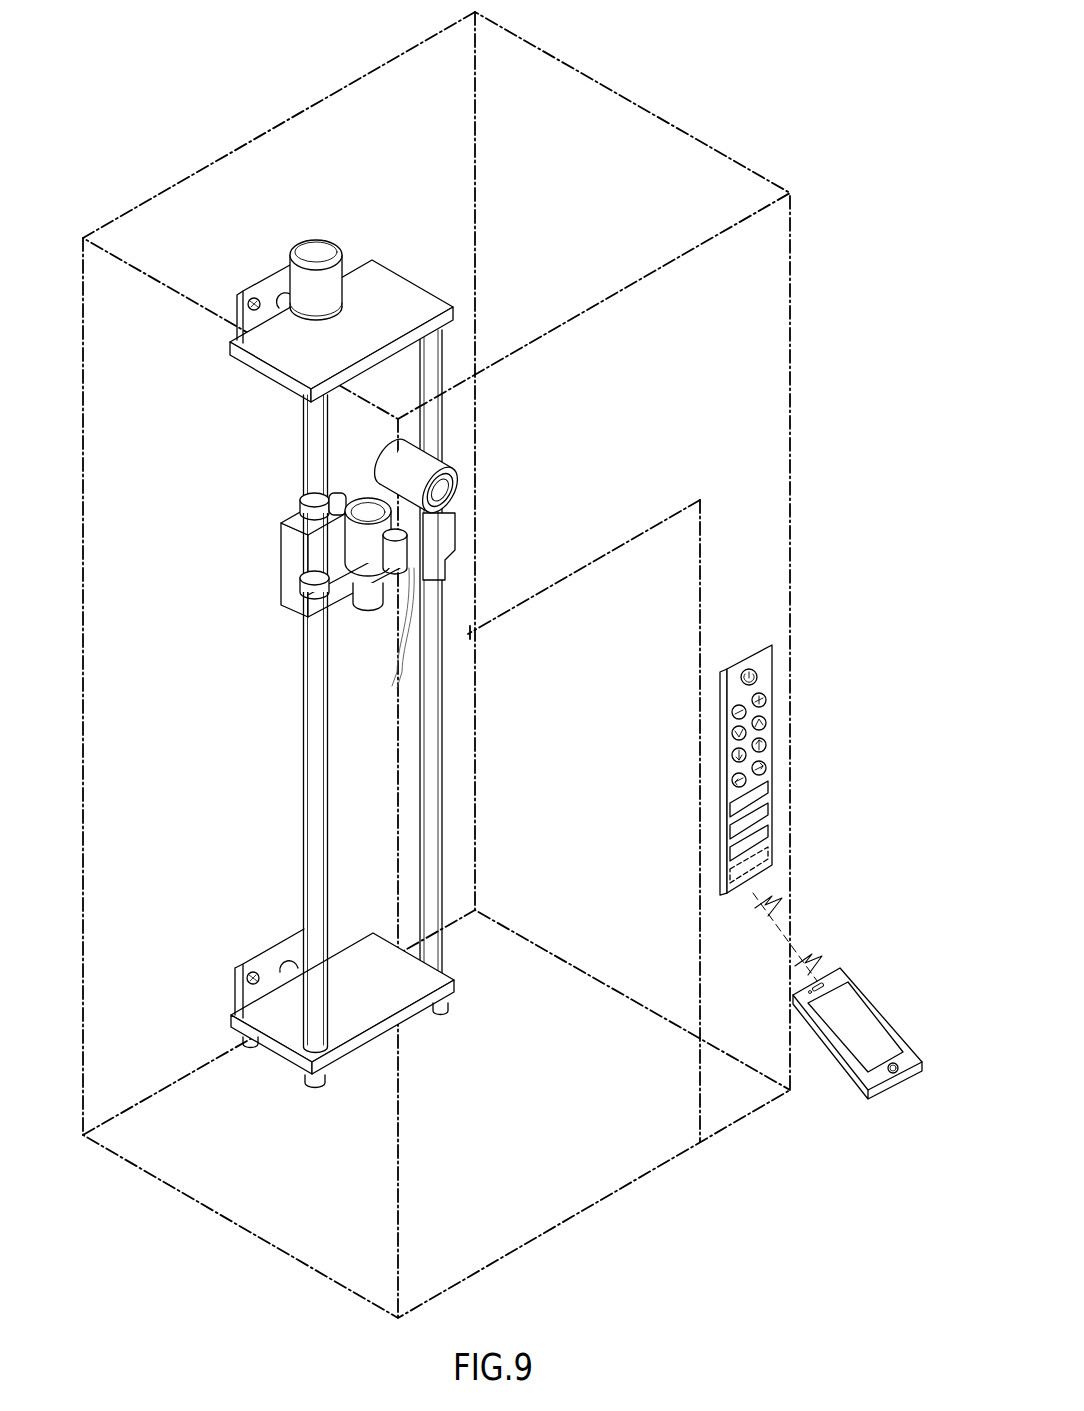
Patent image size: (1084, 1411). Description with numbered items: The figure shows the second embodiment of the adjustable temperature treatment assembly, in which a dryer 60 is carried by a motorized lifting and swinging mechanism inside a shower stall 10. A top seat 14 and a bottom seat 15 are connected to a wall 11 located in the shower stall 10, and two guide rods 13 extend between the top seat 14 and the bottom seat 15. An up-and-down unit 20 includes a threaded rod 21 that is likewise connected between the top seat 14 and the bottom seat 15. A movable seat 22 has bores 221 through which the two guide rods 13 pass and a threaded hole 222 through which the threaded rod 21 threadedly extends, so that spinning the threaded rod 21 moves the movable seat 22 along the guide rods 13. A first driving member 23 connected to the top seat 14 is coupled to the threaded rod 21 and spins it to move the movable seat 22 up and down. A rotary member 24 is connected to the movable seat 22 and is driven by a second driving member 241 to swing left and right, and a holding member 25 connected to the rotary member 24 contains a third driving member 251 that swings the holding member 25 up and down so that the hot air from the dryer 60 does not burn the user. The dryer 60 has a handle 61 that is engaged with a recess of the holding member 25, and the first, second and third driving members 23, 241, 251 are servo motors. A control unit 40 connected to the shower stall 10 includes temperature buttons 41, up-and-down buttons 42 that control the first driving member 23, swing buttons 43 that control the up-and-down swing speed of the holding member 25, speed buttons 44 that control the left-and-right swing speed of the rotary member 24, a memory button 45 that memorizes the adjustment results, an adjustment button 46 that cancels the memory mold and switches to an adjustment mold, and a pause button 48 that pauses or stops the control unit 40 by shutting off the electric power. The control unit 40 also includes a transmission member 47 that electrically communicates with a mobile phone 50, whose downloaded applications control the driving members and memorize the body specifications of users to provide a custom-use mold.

The shower stall 10 is at (712, 147).
The wall 11 is at (450, 100).
The guide rod 13 is at (313, 1030).
The top seat 14 is at (383, 273).
The bottom seat 15 is at (408, 1018).
The up-and-down unit 20 is at (574, 597).
The threaded rod 21 is at (330, 717).
The movable seat 22 is at (335, 612).
The bore 221 is at (307, 575).
The threaded hole 222 is at (300, 495).
The first driving member 23 is at (305, 248).
The rotary member 24 is at (363, 565).
The second driving member 241 is at (383, 608).
The holding member 25 is at (410, 557).
The third driving member 251 is at (347, 493).
The control unit 40 is at (792, 745).
The temperature button 41 is at (762, 692).
The up-and-down button 42 is at (767, 720).
The swing button 43 is at (767, 747).
The speed button 44 is at (765, 772).
The memory button 45 is at (768, 808).
The adjustment button 46 is at (770, 833).
The transmission member 47 is at (772, 857).
The pause button 48 is at (763, 788).
The mobile phone 50 is at (840, 1077).
The dryer 60 is at (430, 460).
The handle 61 is at (450, 545).